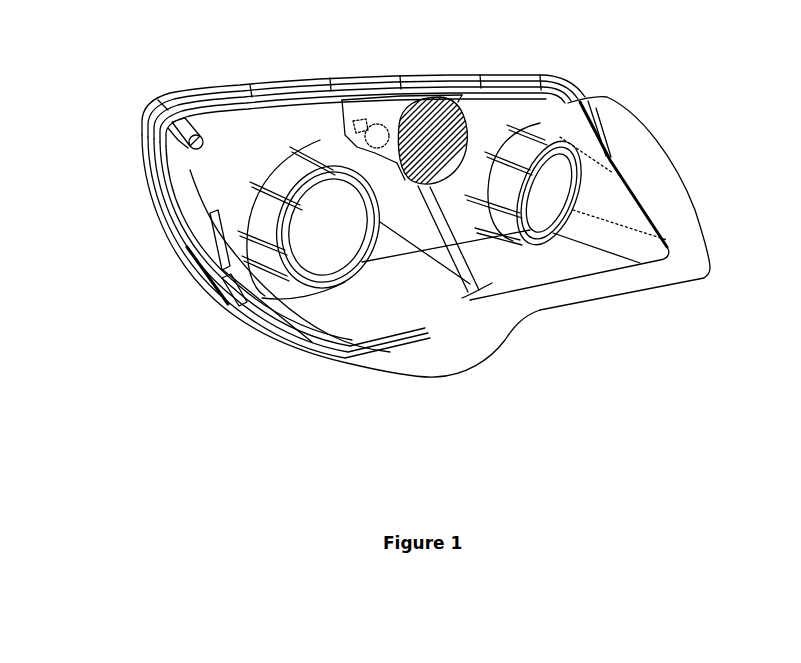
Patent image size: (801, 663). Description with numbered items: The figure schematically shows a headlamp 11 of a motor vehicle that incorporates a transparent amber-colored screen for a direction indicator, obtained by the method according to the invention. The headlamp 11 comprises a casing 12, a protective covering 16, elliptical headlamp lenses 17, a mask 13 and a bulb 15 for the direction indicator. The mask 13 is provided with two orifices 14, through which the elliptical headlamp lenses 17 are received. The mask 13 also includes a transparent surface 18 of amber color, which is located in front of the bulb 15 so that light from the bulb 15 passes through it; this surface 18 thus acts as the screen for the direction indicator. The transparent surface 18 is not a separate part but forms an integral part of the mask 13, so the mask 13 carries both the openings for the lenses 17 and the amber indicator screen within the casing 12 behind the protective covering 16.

The headlamp 11 is at (110, 130).
The casing 12 is at (210, 90).
The mask 13 is at (233, 160).
The orifices 14 is at (347, 273).
The bulb 15 is at (355, 117).
The protective covering 16 is at (675, 157).
The elliptical headlamp lenses 17 is at (345, 230).
The transparent surface 18 is at (457, 127).